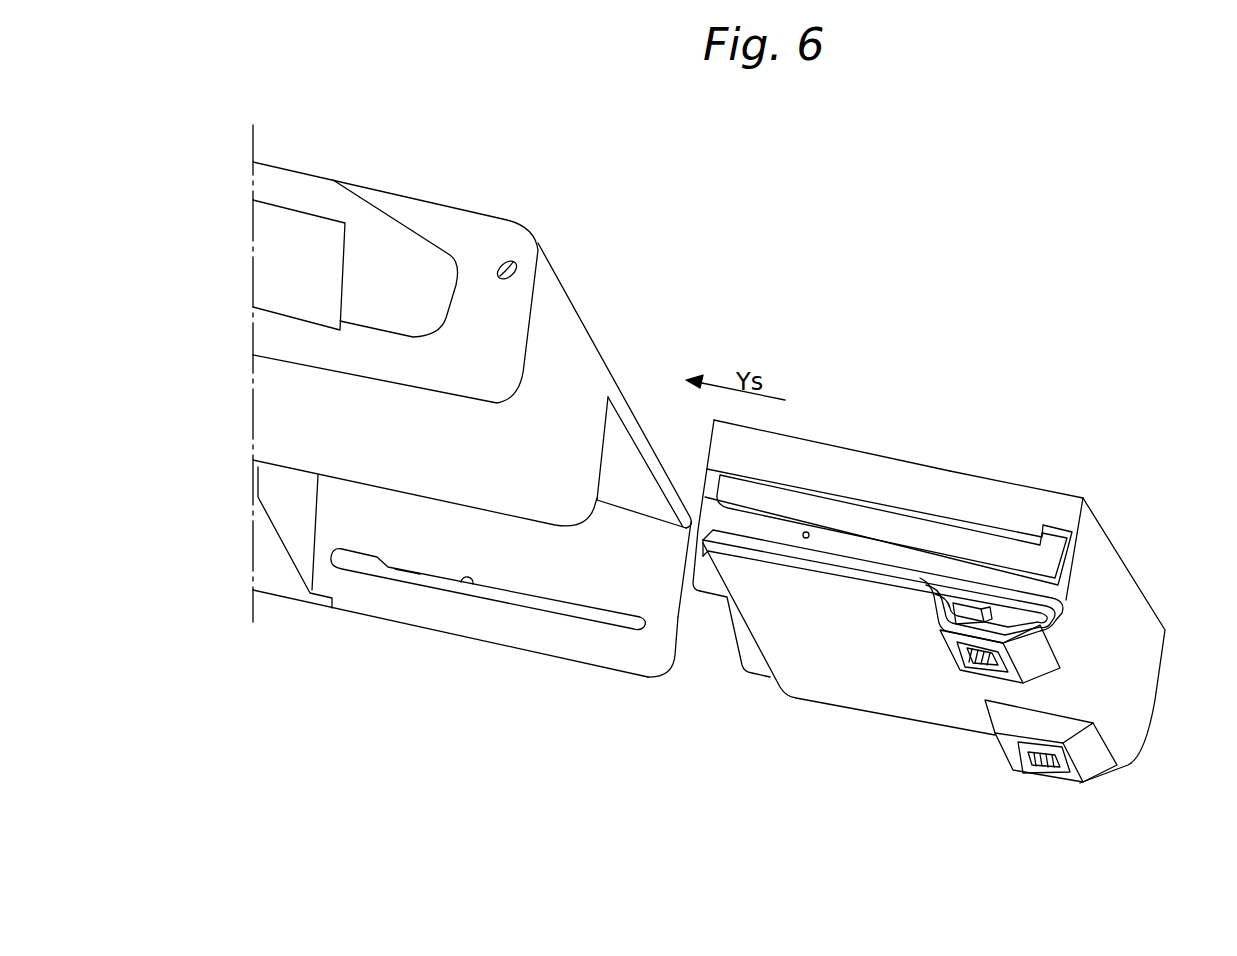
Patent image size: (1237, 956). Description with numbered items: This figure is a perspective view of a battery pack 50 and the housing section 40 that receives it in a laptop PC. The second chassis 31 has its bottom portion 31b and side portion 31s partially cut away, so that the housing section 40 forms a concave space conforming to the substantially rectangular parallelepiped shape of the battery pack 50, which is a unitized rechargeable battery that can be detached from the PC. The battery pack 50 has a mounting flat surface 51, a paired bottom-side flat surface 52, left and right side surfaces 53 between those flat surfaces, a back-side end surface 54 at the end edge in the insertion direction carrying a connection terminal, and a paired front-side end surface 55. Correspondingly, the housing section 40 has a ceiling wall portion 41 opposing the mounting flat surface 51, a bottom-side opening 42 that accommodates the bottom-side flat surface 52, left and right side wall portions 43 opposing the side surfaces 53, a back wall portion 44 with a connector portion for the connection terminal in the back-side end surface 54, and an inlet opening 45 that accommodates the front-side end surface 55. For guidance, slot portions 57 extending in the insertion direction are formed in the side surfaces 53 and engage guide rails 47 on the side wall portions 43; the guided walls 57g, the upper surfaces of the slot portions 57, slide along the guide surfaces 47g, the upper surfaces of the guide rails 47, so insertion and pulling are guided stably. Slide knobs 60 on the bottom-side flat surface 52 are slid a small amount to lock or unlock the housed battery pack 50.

The second chassis 31 is at (372, 182).
The side portion 31s is at (572, 382).
The bottom portion 31b is at (293, 415).
The ceiling wall portion 41 is at (620, 460).
The housing section 40 is at (417, 625).
The bottom-side opening 42 is at (607, 668).
The side wall portions 43 is at (503, 615).
The back wall portion 44 is at (297, 537).
The inlet opening 45 is at (671, 630).
The guide rails 47 is at (407, 582).
The guide surfaces 47g is at (467, 583).
The battery pack 50 is at (957, 452).
The mounting flat surface 51 is at (1035, 485).
The bottom-side flat surface 52 is at (857, 680).
The side surfaces 53 is at (886, 467).
The back-side end surface 54 is at (720, 637).
The front-side end surface 55 is at (1142, 647).
The slot portions 57 is at (823, 545).
The guided walls 57g is at (806, 533).
The slide knobs 60 is at (975, 665).